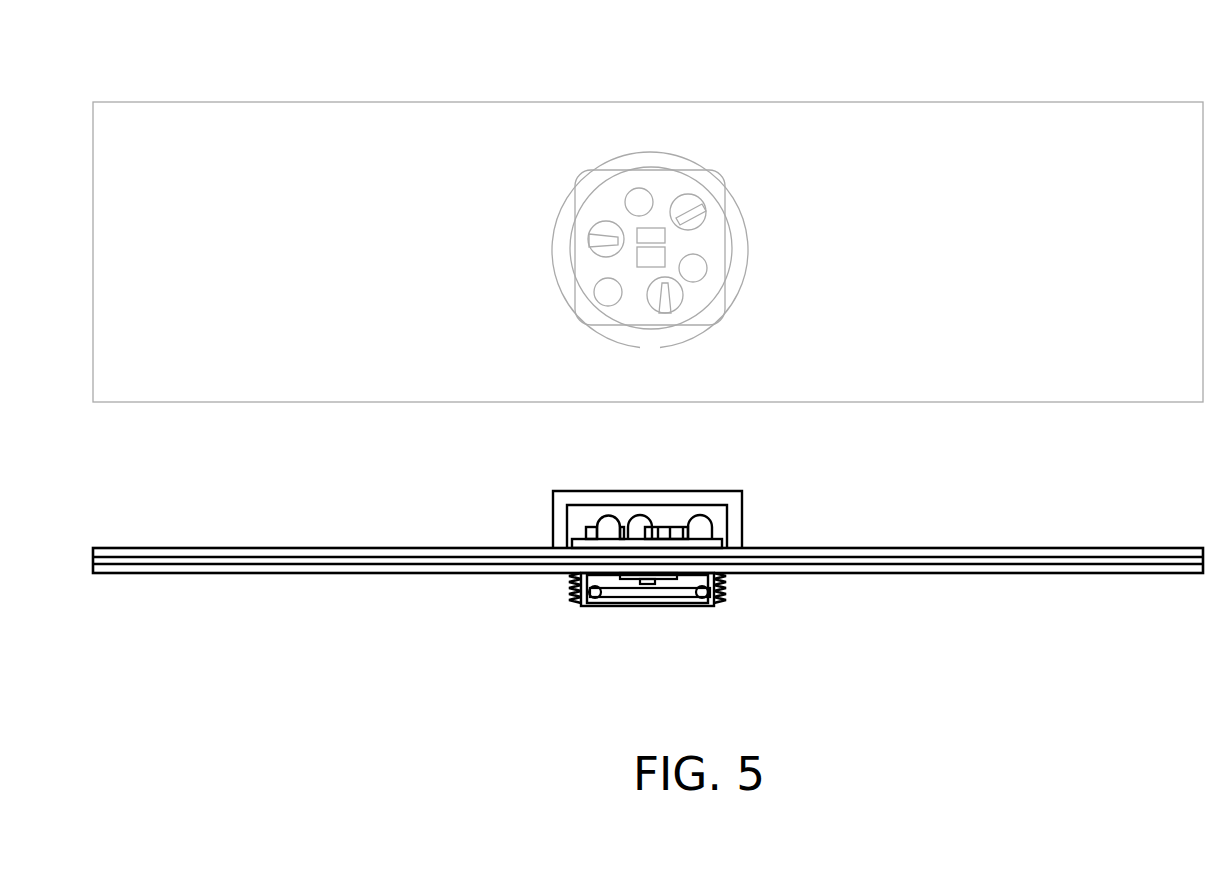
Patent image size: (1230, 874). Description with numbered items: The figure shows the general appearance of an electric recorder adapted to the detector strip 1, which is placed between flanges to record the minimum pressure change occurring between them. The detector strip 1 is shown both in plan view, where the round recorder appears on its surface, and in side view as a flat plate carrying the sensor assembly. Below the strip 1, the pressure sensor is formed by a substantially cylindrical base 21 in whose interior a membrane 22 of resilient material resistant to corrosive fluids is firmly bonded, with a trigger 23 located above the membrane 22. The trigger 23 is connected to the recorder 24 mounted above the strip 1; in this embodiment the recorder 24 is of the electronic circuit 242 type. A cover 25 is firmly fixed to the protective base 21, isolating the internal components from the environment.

The strip 1 is at (317, 119).
The electronic circuit 242 is at (685, 162).
The cover 25 is at (743, 359).
The recorder 24 is at (530, 504).
The base 21 is at (582, 584).
The membrane 22 is at (665, 593).
The trigger 23 is at (677, 576).